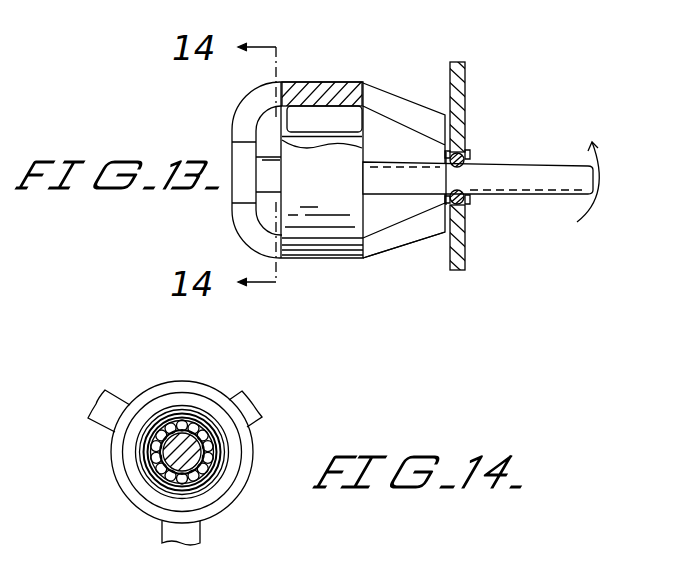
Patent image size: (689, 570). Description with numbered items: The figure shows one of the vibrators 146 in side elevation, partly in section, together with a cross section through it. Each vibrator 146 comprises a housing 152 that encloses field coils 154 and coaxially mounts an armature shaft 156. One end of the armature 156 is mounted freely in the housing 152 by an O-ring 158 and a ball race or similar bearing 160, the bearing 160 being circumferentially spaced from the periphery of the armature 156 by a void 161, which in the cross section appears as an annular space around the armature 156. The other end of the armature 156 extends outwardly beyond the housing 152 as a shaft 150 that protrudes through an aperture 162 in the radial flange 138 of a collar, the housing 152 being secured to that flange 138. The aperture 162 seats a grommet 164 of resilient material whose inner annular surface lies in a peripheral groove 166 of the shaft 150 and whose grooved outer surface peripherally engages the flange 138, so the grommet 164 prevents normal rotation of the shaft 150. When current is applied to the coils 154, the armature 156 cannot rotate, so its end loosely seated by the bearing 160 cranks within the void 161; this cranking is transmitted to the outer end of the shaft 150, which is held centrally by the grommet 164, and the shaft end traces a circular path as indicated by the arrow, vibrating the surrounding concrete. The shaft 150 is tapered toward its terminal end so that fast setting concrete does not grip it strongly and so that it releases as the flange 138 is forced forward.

In FIG. 13, the flange 138 is at (466, 76).
In FIG. 13, the vibrator 146 is at (363, 80).
In FIG. 13, the shaft 150 is at (575, 172).
In FIG. 13, the housing 152 is at (392, 240).
In FIG. 14, the housing 152 is at (253, 438).
In FIG. 13, the field coils 154 is at (306, 115).
In FIG. 13, the armature shaft 156 is at (362, 145).
In FIG. 14, the O-ring 158 is at (206, 410).
In FIG. 14, the ball race 160 is at (170, 427).
In FIG. 14, the void 161 is at (145, 454).
In FIG. 13, the aperture 162 is at (464, 150).
In FIG. 13, the grommet 164 is at (466, 203).
In FIG. 13, the peripheral groove 166 is at (466, 178).